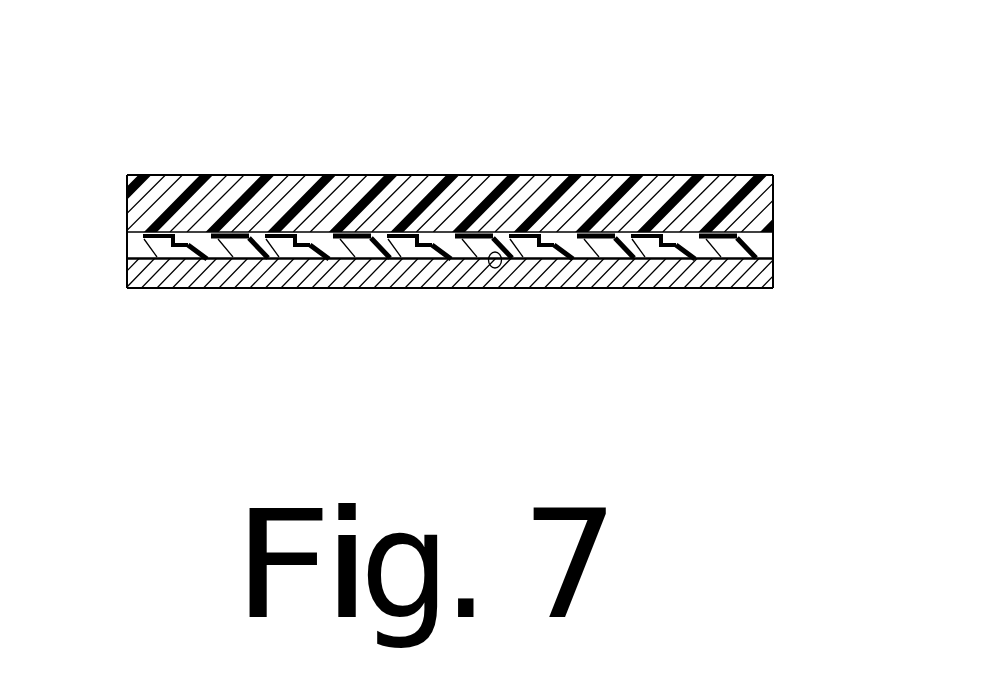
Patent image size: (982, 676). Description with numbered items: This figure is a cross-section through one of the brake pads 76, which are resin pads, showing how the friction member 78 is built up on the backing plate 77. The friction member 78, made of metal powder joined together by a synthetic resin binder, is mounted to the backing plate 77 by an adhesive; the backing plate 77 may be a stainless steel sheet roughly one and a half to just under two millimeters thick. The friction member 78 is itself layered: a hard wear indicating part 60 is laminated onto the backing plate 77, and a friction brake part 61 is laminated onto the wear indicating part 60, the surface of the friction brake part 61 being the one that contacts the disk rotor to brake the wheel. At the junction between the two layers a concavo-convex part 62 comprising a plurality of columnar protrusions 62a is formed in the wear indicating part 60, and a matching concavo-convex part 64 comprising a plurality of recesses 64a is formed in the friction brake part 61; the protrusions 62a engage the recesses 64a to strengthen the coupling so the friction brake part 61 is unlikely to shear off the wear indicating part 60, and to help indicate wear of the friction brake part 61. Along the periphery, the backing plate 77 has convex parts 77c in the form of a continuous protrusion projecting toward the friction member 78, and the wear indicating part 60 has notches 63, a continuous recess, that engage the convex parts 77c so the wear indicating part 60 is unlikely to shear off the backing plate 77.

The wear indicating part 60 is at (391, 173).
The friction brake part 61 is at (134, 188).
The concavo-convex part 62 is at (412, 232).
The columnar protrusions 62a is at (258, 232).
The notches 63 is at (129, 265).
The concavo-convex part 64 is at (497, 252).
The recesses 64a is at (563, 230).
The brake pads 76 is at (412, 107).
The backing plate 77 is at (772, 277).
The convex parts 77c is at (774, 245).
The friction member 78 is at (781, 212).